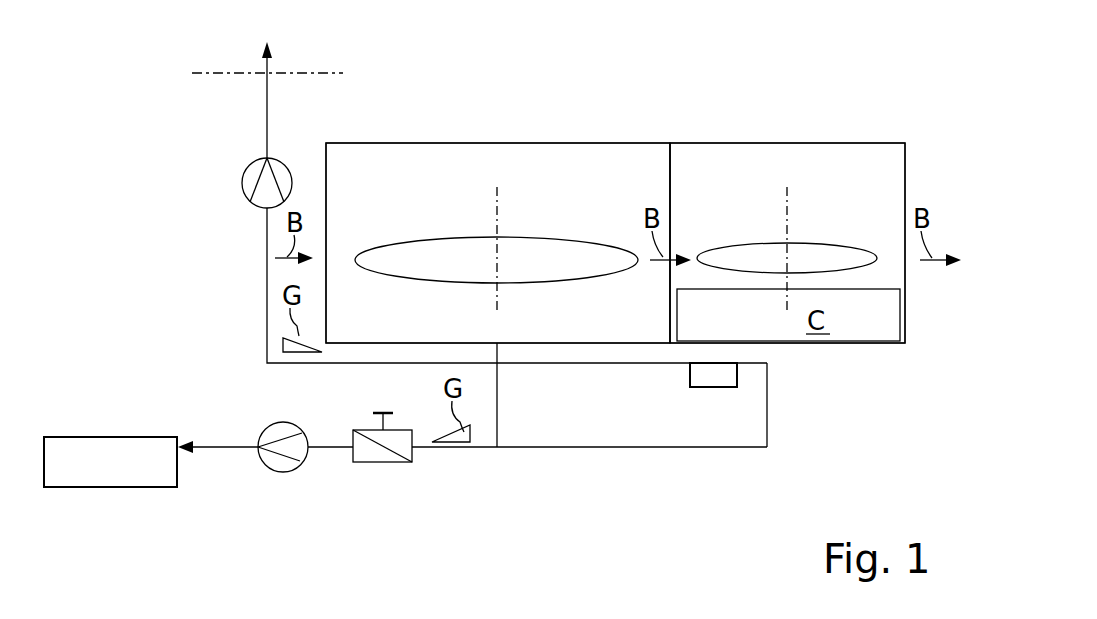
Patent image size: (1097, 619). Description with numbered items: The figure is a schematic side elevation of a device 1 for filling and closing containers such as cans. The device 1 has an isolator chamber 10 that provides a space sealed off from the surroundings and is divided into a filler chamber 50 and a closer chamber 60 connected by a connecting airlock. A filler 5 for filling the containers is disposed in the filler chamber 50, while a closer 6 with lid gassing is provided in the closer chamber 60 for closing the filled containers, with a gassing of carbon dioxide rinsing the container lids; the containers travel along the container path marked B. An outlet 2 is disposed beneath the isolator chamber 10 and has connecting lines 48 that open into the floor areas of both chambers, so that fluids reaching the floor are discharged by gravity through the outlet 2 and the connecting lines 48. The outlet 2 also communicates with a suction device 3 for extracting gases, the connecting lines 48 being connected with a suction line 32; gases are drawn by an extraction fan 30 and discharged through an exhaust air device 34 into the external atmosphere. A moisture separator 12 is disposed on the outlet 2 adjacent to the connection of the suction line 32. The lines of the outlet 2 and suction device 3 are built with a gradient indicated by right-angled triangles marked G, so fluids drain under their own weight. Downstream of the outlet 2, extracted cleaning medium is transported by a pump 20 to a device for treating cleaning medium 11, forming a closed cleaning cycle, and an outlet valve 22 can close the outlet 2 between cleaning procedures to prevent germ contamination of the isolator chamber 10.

The device for filling and closing containers 1 is at (824, 66).
The outlet 2 is at (803, 469).
The suction device 3 is at (207, 380).
The filler 5 is at (428, 238).
The closer 6 is at (745, 242).
The isolator chamber 10 is at (713, 143).
The device for treating cleaning medium 11 is at (110, 468).
The moisture separator 12 is at (716, 375).
The pump 20 is at (276, 465).
The outlet valve 22 is at (372, 465).
The extraction fan 30 is at (250, 177).
The suction line 32 is at (343, 363).
The exhaust air device 34 is at (278, 50).
The connecting lines 48 is at (497, 408).
The filler chamber 50 is at (560, 163).
The closer chamber 60 is at (870, 163).